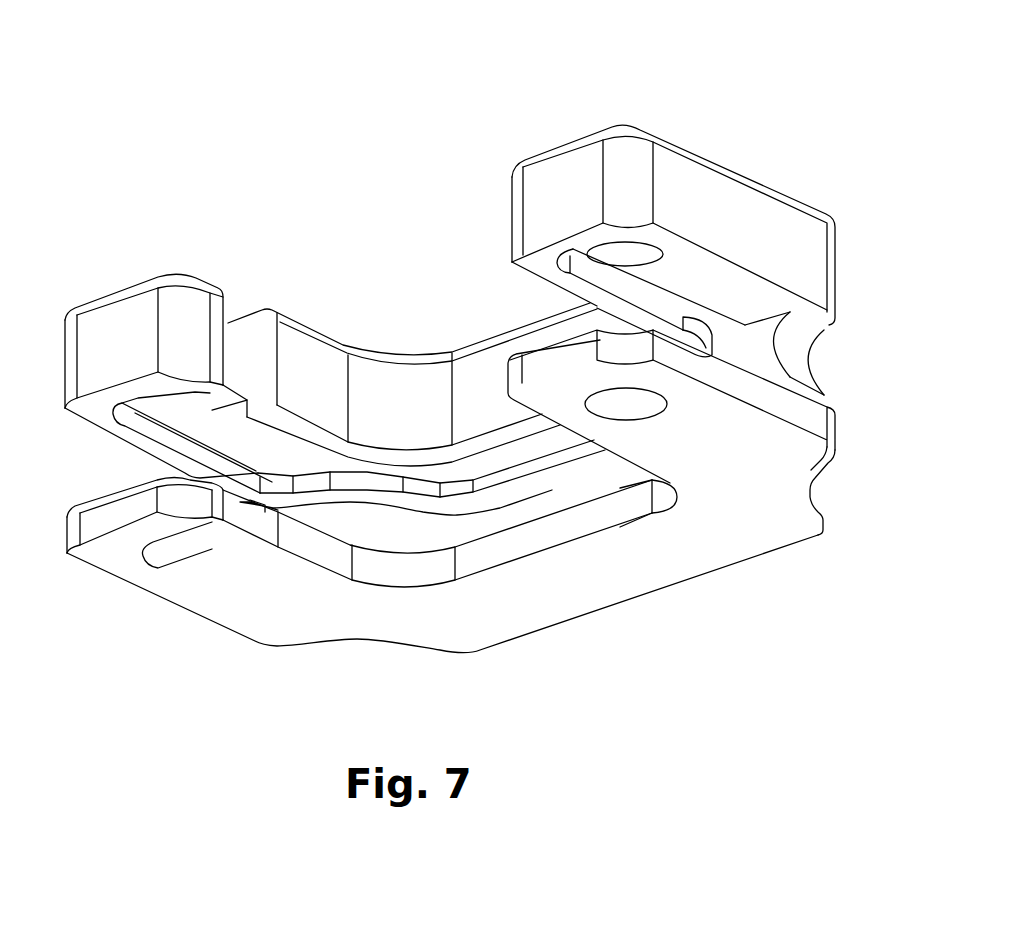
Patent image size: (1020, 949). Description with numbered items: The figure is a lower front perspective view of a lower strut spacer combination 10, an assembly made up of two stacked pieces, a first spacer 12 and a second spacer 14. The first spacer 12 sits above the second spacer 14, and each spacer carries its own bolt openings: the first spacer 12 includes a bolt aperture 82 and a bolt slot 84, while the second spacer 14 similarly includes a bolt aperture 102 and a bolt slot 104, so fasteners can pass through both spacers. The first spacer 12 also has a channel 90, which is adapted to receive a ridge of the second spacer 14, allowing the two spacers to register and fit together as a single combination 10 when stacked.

The lower strut spacer combination 10 is at (255, 700).
The first spacer 12 is at (556, 166).
The second spacer 14 is at (615, 590).
The bolt aperture 82 is at (773, 322).
The bolt slot 84 is at (252, 335).
The channel 90 is at (218, 433).
The bolt aperture 102 is at (637, 405).
The bolt slot 104 is at (173, 555).